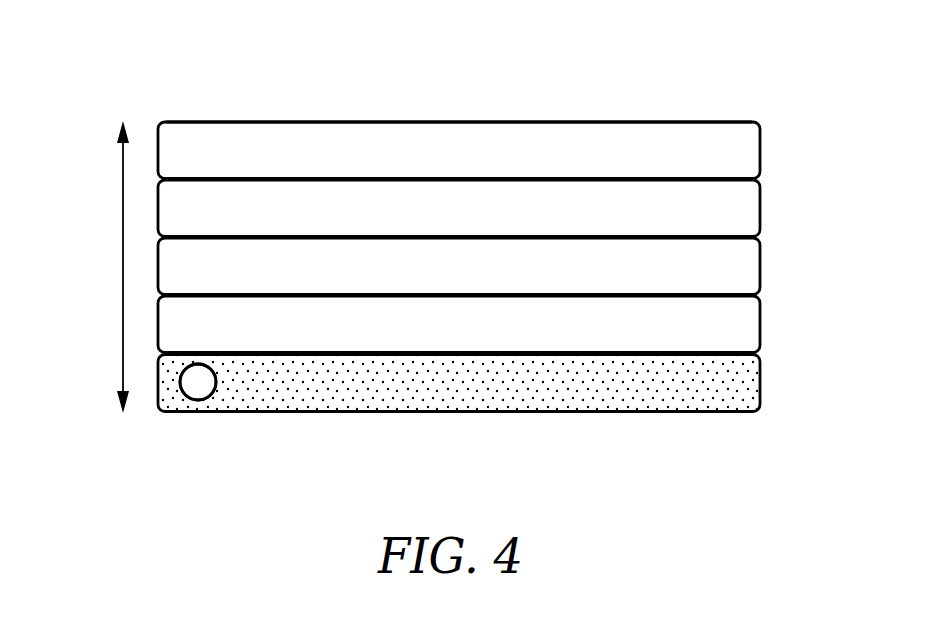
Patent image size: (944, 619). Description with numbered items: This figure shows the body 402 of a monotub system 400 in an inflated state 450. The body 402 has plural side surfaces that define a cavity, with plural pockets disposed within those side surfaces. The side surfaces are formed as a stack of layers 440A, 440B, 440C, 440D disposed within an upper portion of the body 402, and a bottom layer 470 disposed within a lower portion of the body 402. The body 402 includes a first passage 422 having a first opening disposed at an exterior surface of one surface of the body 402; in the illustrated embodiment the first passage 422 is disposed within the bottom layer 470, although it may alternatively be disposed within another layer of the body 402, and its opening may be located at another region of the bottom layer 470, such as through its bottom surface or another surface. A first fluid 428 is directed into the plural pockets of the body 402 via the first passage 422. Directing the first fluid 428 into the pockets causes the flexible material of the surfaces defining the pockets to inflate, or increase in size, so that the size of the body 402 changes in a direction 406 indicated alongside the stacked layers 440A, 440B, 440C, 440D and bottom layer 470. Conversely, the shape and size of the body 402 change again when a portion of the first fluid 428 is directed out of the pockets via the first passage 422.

The monotub system 400 is at (620, 67).
The body 402 is at (458, 102).
The direction 406 is at (102, 268).
The first passage 422 is at (209, 417).
The first fluid 428 is at (193, 408).
The layer 440A is at (780, 325).
The layer 440B is at (780, 267).
The layer 440C is at (780, 209).
The layer 440D is at (780, 151).
The inflated state 450 is at (203, 33).
The bottom layer 470 is at (780, 383).